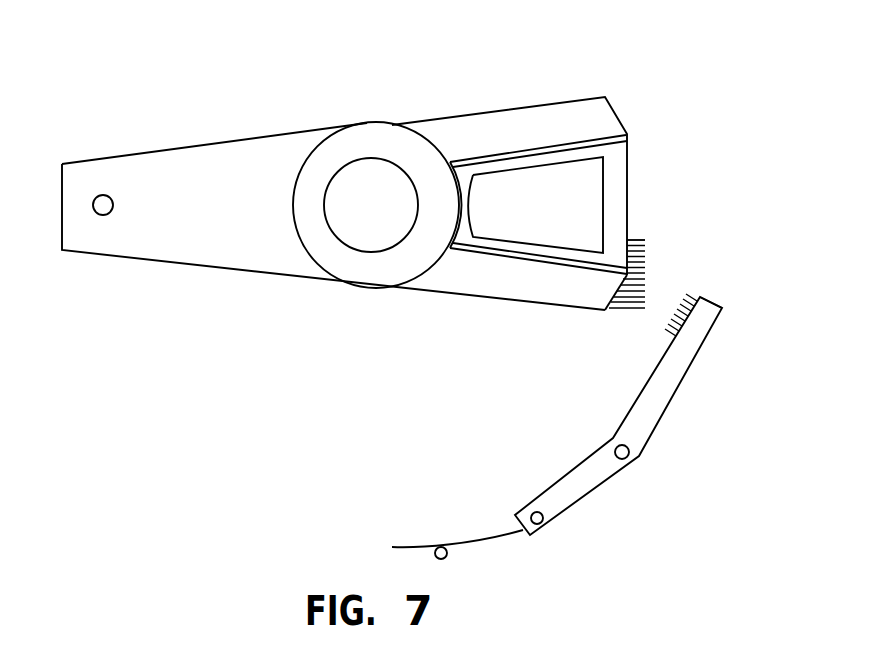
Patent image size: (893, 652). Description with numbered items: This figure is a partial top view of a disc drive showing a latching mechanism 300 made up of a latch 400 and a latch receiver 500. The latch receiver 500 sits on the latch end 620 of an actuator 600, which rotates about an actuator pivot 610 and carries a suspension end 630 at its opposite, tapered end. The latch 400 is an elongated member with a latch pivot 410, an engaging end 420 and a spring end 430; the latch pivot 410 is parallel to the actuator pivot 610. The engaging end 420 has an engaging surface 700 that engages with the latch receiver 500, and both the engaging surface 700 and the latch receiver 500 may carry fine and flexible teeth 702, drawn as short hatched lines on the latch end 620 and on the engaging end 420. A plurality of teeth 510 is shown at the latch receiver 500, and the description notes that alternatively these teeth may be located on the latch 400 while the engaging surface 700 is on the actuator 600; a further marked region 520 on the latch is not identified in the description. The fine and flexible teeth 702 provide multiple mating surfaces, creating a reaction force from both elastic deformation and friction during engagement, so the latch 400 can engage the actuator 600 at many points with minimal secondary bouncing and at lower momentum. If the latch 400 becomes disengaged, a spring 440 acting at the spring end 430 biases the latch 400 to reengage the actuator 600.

The latching mechanism 300 is at (733, 85).
The latch 400 is at (681, 383).
The latch pivot 410 is at (626, 458).
The engaging end 420 is at (721, 315).
The spring end 430 is at (518, 508).
The spring 440 is at (485, 541).
The latch receiver 500 is at (626, 306).
The plurality of teeth 510 is at (628, 277).
The arm brush 520 is at (683, 297).
The actuator 600 is at (153, 261).
The actuator pivot 610 is at (358, 180).
The latch end 620 is at (617, 116).
The suspension end 630 is at (97, 160).
The engaging surface 700 is at (663, 337).
The fine and flexible teeth 702 is at (636, 237).